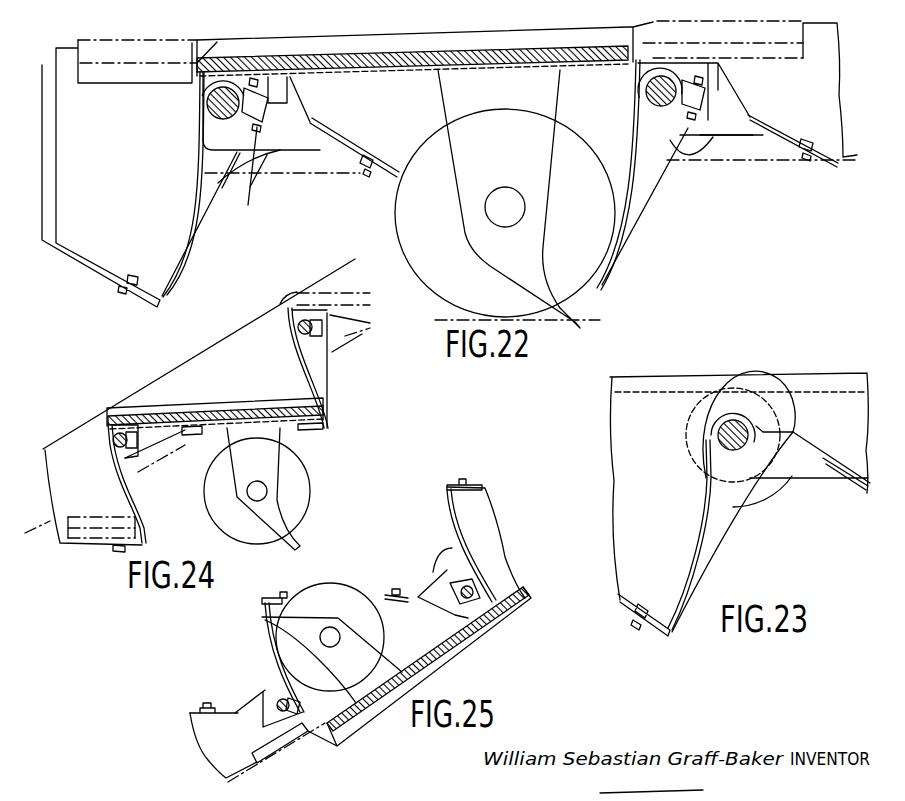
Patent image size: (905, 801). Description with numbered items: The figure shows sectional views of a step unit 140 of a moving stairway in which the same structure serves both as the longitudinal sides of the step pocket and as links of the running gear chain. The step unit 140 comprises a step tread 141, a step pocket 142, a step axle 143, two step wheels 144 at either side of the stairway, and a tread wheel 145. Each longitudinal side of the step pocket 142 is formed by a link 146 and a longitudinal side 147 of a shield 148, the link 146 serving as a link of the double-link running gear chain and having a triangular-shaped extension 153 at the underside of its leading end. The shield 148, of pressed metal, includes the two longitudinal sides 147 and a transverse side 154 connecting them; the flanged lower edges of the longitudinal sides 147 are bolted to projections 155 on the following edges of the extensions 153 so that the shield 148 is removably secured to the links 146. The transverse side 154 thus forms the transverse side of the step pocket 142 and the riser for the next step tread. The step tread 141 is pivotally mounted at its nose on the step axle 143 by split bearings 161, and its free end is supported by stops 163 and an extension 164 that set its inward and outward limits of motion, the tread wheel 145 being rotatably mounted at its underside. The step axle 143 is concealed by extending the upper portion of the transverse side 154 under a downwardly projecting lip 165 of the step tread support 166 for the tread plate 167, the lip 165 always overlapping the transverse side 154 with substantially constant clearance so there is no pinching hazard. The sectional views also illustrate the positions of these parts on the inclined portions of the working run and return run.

In FIG. 22, the step unit 140 is at (413, 23).
In FIG. 24, the step unit 140 is at (210, 341).
In FIG. 25, the step unit 140 is at (387, 556).
In FIG. 22, the step tread 141 is at (253, 40).
In FIG. 24, the step tread 141 is at (197, 406).
In FIG. 25, the step tread 141 is at (447, 650).
In FIG. 22, the step pocket 142 is at (400, 125).
In FIG. 24, the step pocket 142 is at (247, 383).
In FIG. 25, the step pocket 142 is at (423, 628).
In FIG. 23, the step pocket 142 is at (662, 496).
In FIG. 22, the step axle 143 is at (226, 118).
In FIG. 24, the step axle 143 is at (136, 460).
In FIG. 25, the step axle 143 is at (473, 589).
In FIG. 23, the step axle 143 is at (733, 448).
In FIG. 22, the step wheel 144 is at (268, 182).
In FIG. 24, the step wheel 144 is at (293, 298).
In FIG. 25, the step wheel 144 is at (440, 563).
In FIG. 23, the step wheel 144 is at (762, 504).
In FIG. 22, the tread wheel 145 is at (396, 208).
In FIG. 24, the tread wheel 145 is at (310, 489).
In FIG. 25, the tread wheel 145 is at (323, 583).
In FIG. 22, the link 146 is at (752, 136).
In FIG. 24, the link 146 is at (113, 487).
In FIG. 25, the link 146 is at (420, 594).
In FIG. 23, the link 146 is at (818, 480).
In FIG. 22, the longitudinal side of shield 147 is at (307, 120).
In FIG. 22, the shield 148 is at (670, 175).
In FIG. 24, the shield 148 is at (321, 360).
In FIG. 23, the shield 148 is at (640, 551).
In FIG. 22, the triangular-shaped extension 153 is at (625, 237).
In FIG. 23, the triangular-shaped extension 153 is at (718, 546).
In FIG. 22, the transverse side 154 is at (633, 198).
In FIG. 24, the transverse side 154 is at (128, 488).
In FIG. 25, the transverse side 154 is at (266, 640).
In FIG. 23, the transverse side 154 is at (698, 528).
In FIG. 24, the projection 155 is at (197, 436).
In FIG. 22, the split bearing 161 is at (247, 175).
In FIG. 24, the stop 163 is at (126, 549).
In FIG. 23, the stop 163 is at (660, 613).
In FIG. 22, the extension 164 is at (590, 304).
In FIG. 24, the extension 164 is at (296, 546).
In FIG. 25, the extension 164 is at (262, 616).
In FIG. 22, the downwardly projecting lip 165 is at (200, 88).
In FIG. 24, the downwardly projecting lip 165 is at (110, 430).
In FIG. 22, the step tread support 166 is at (360, 70).
In FIG. 22, the tread plate 167 is at (308, 55).